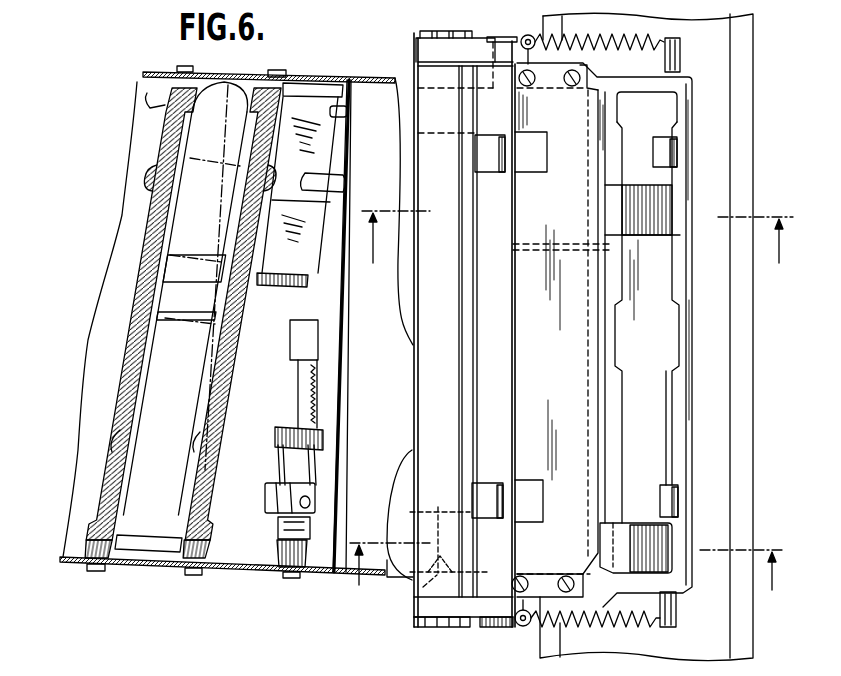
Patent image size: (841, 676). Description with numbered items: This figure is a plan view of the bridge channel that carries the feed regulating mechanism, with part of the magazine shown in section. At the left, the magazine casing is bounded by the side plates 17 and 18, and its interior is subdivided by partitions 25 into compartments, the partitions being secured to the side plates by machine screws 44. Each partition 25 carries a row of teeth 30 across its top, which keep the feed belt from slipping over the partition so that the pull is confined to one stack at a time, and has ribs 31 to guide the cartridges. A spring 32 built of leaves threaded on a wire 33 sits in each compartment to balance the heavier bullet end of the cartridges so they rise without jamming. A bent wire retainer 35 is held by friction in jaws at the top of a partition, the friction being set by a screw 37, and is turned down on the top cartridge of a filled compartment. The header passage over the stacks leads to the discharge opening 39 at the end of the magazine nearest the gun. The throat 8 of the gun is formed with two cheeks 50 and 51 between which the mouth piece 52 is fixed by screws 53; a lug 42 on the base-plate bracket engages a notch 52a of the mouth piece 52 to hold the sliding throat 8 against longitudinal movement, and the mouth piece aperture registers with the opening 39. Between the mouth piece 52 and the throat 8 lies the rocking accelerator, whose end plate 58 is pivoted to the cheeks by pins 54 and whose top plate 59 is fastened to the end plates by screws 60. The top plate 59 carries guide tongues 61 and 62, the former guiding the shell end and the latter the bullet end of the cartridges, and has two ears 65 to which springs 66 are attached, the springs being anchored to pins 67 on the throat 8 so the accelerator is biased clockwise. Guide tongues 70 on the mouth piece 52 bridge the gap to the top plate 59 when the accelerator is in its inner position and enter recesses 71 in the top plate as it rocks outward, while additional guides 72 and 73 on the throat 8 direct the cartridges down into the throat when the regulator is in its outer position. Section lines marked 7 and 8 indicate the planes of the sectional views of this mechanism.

The side plate 17 is at (150, 571).
The side plate 18 is at (152, 72).
The partition 25 is at (220, 372).
The teeth 30 is at (306, 401).
The rib 31 is at (190, 438).
The spring 32 is at (286, 263).
The wire 33 is at (242, 102).
The bent wire retainer 35 is at (278, 531).
The screw 37 is at (312, 503).
The discharge opening 39 is at (388, 329).
The lug 42 is at (445, 512).
The machine screw 44 is at (287, 73).
The cheek 50 is at (475, 605).
The cheek 51 is at (472, 53).
The mouth piece 52 is at (464, 330).
The notch 52a is at (422, 588).
The screw 53 is at (457, 31).
The pin 54 is at (510, 37).
The end plate 58 is at (484, 80).
The top plate 59 is at (602, 335).
The screw 60 is at (533, 86).
The guide tongue 61 is at (627, 530).
The guide tongue 62 is at (647, 238).
The ear 65 is at (536, 40).
The spring 66 is at (652, 40).
The pin 67 is at (682, 58).
The guide tongue 70 is at (490, 158).
The recess 71 is at (538, 157).
The guide 72 is at (660, 148).
The guide 73 is at (664, 490).
The section line 7 is at (566, 556).
The throat 8 is at (577, 226).